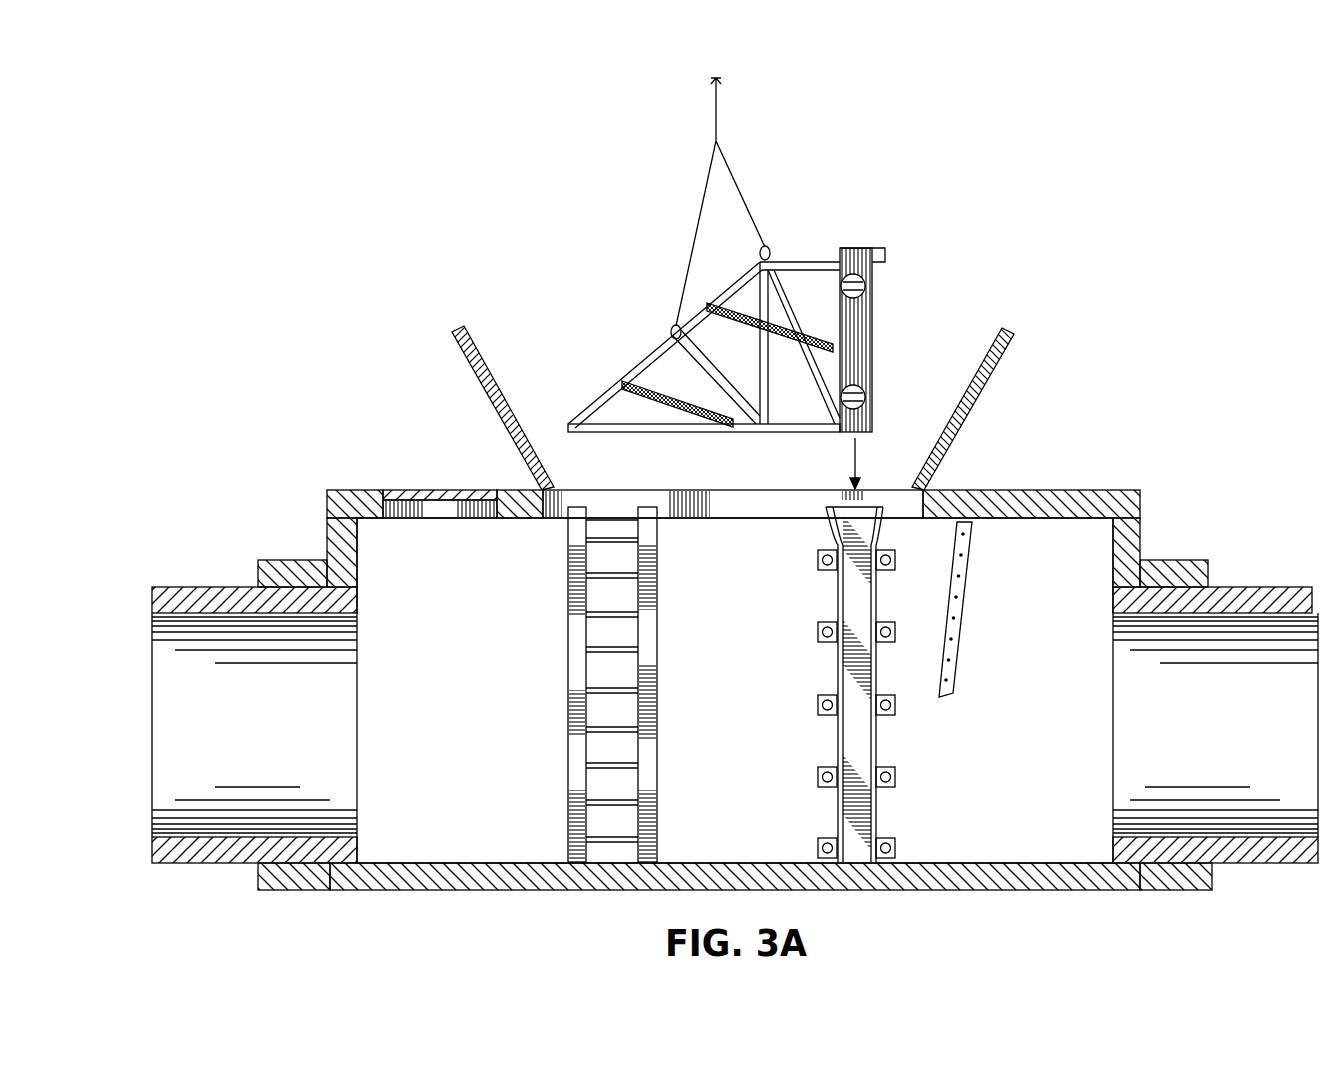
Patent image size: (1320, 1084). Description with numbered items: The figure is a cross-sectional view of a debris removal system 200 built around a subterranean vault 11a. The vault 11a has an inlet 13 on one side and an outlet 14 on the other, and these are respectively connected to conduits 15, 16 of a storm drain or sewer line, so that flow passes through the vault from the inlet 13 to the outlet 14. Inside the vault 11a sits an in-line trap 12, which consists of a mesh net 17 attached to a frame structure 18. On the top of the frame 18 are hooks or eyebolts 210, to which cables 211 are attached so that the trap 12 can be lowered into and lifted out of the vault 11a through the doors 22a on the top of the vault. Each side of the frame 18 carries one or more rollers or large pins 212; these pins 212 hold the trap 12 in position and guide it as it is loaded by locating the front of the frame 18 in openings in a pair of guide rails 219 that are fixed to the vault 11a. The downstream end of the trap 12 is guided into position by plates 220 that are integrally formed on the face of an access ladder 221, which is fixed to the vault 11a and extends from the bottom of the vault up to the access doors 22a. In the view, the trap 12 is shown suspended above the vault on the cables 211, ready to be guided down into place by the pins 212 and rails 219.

The system 200 is at (261, 288).
The in-line trap 12 is at (747, 255).
The frame structure 18 is at (736, 292).
The mesh net 17 is at (740, 367).
The hooks or eyebolts 210 is at (770, 252).
The cables 211 is at (739, 181).
The rollers or large pins 212 is at (866, 289).
The doors 22a is at (456, 328).
The subterranean vault 11a is at (1140, 528).
The conduit 16 is at (234, 586).
The conduit 15 is at (1250, 586).
The outlet 14 is at (348, 752).
The inlet 13 is at (1153, 752).
The access ladder 221 is at (569, 684).
The plates 220 is at (577, 680).
The guide rails 219 is at (878, 598).